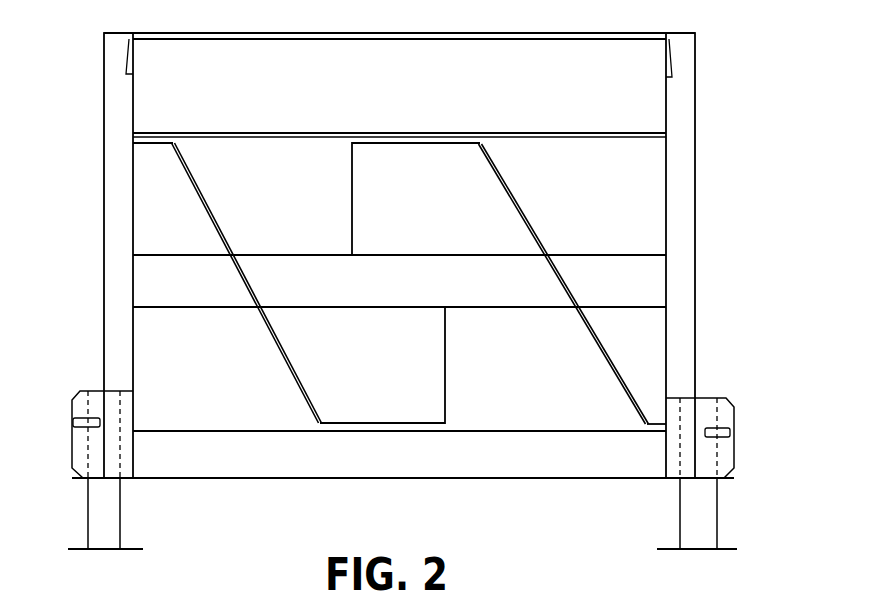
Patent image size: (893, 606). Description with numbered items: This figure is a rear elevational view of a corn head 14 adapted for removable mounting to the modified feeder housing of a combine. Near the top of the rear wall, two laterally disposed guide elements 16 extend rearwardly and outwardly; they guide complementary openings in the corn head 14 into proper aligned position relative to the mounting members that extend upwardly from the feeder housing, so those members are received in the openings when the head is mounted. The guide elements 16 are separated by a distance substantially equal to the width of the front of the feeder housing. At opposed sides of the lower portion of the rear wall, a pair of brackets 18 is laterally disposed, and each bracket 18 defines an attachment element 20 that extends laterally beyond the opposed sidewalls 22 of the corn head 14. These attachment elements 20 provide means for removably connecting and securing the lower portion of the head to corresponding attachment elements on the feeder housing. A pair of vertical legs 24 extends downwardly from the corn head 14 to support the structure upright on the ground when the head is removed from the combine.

The corn head 14 is at (716, 57).
The guide element 16 is at (127, 73).
The bracket 18 is at (72, 466).
The attachment element 20 is at (73, 423).
The sidewall 22 is at (104, 330).
The vertical leg 24 is at (88, 516).